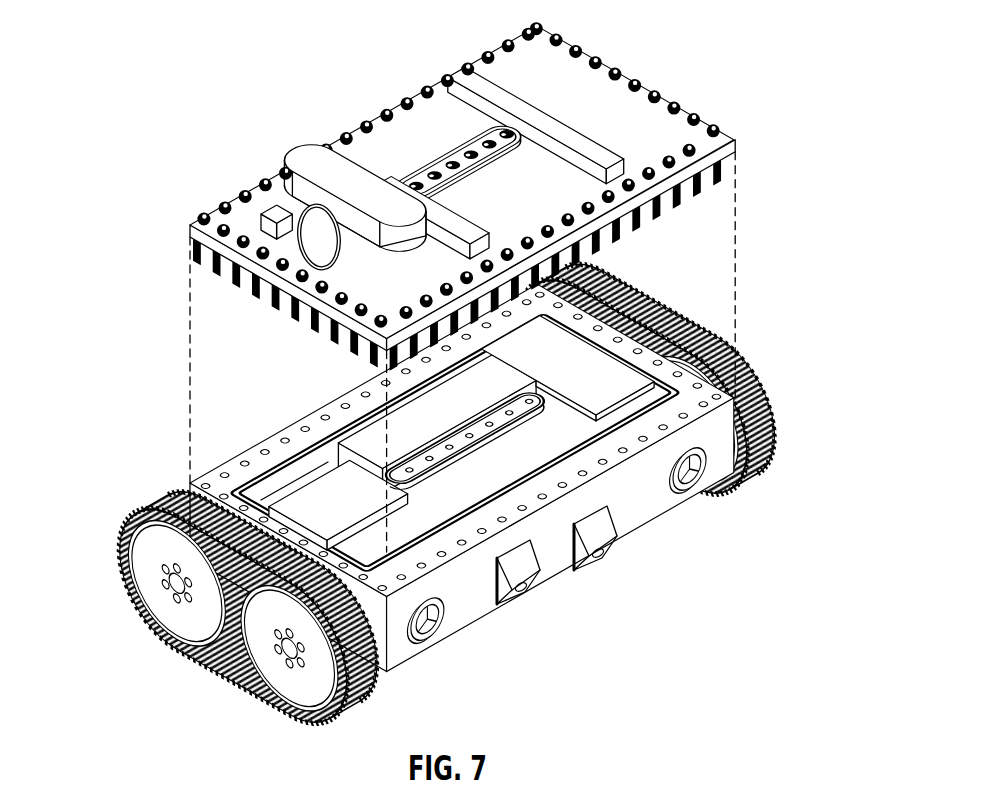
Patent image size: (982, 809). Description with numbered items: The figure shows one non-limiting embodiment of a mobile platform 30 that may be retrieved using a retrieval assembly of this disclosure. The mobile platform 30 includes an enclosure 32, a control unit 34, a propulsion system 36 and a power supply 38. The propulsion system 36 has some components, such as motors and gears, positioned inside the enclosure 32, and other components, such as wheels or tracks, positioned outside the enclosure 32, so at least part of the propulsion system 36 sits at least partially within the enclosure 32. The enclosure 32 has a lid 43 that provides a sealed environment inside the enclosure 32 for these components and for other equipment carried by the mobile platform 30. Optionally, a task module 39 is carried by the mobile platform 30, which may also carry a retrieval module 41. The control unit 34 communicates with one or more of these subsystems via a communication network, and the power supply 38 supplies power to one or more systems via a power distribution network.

The mobile platform 30 is at (432, 383).
The enclosure 32 is at (445, 494).
The control unit 34 is at (377, 446).
The propulsion system 36 is at (749, 339).
The power supply 38 is at (559, 356).
The task module 39 is at (517, 459).
The retrieval module 41 is at (313, 192).
The lid 43 is at (603, 93).